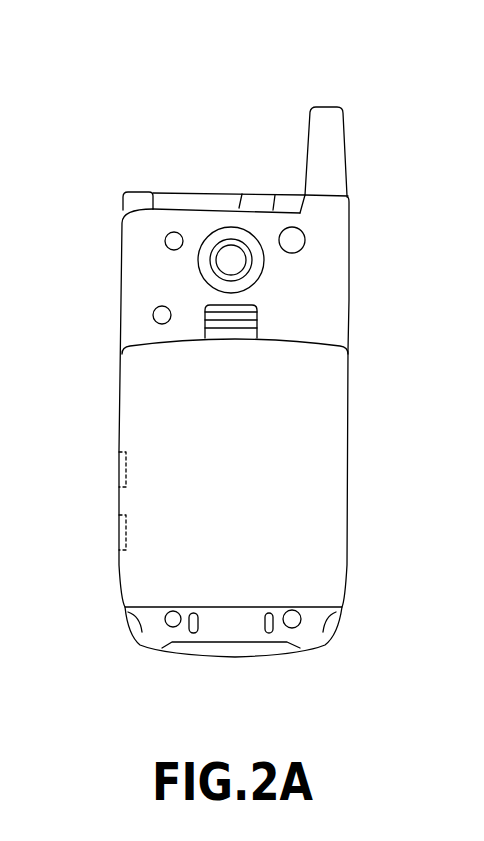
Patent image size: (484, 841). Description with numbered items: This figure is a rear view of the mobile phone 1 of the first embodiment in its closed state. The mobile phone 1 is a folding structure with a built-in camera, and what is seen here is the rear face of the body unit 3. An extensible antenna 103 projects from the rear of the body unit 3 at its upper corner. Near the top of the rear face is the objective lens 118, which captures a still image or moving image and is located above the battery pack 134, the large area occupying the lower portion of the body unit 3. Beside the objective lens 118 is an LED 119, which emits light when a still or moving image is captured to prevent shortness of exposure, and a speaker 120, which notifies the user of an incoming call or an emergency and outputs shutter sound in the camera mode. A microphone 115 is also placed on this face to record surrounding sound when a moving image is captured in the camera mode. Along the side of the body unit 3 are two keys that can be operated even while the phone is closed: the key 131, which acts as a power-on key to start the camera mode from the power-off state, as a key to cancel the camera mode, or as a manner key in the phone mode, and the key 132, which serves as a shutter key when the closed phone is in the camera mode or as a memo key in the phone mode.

The mobile phone 1 is at (243, 82).
The body unit 3 is at (349, 323).
The extensible antenna 103 is at (335, 150).
The microphone 115 is at (153, 316).
The objective lens 118 is at (231, 255).
The LED 119 is at (165, 242).
The speaker 120 is at (305, 240).
The key 131 is at (118, 466).
The key 132 is at (118, 528).
The battery pack 134 is at (318, 440).